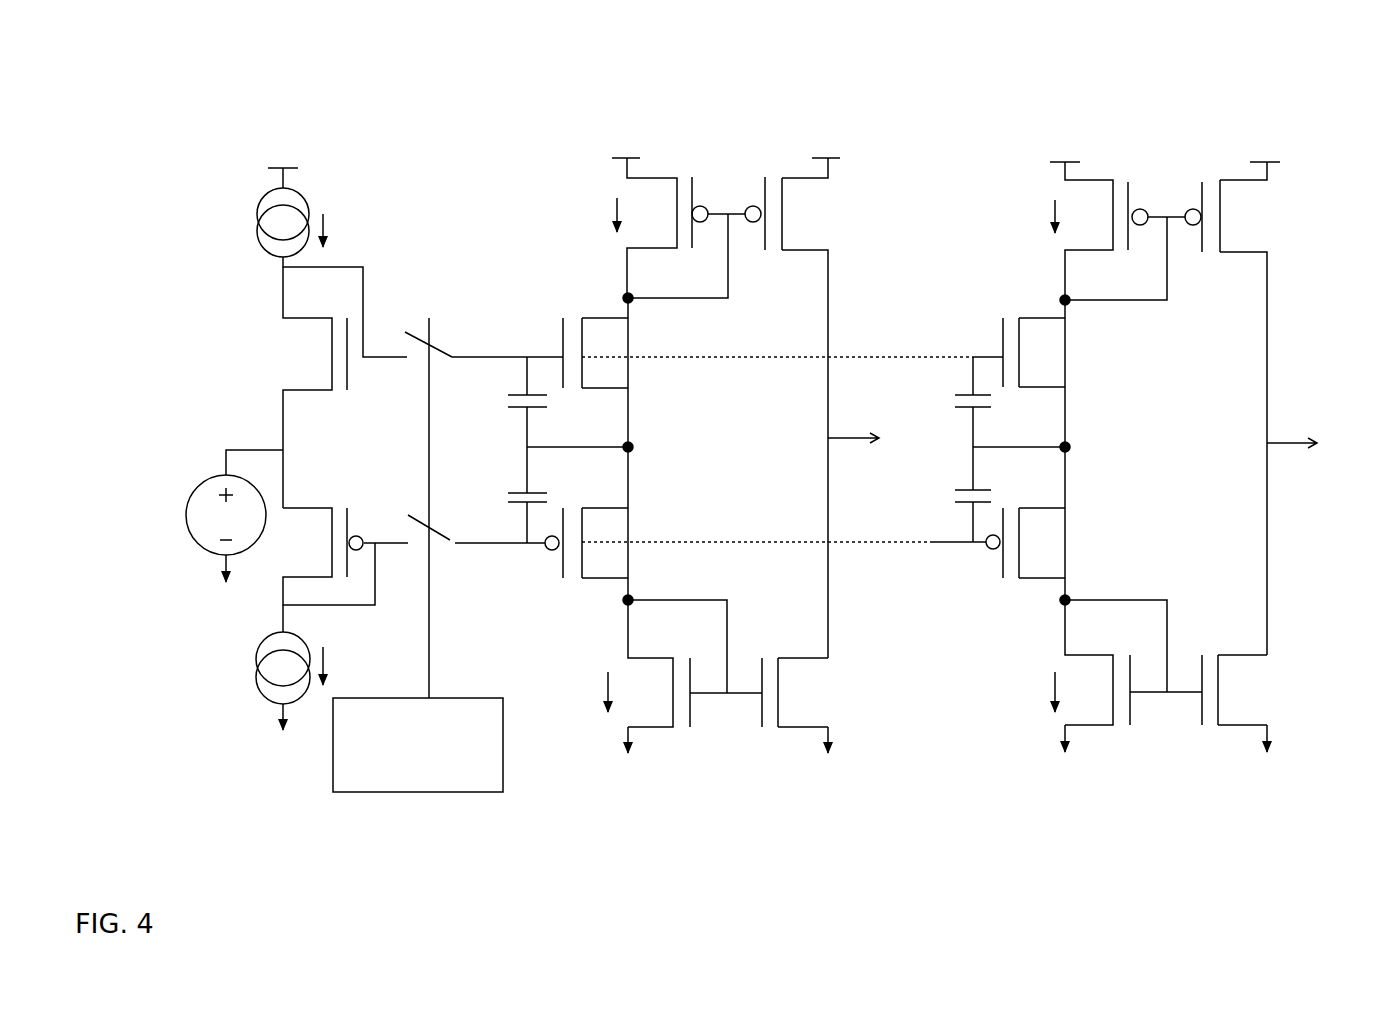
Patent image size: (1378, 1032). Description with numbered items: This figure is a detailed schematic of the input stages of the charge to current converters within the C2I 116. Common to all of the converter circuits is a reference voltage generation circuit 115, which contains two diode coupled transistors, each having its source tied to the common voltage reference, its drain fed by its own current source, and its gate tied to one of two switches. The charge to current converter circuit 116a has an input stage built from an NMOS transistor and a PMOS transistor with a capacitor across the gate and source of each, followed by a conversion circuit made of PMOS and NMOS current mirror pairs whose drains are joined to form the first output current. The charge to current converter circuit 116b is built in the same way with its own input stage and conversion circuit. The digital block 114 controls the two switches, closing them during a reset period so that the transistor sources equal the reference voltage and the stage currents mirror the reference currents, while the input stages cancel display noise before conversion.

The C2I 116 is at (257, 77).
The charge to current converter circuit 116a is at (625, 83).
The charge to current converter circuit 116b is at (1067, 86).
The reference voltage generation circuit 115 is at (425, 232).
The digital block 114 is at (402, 792).